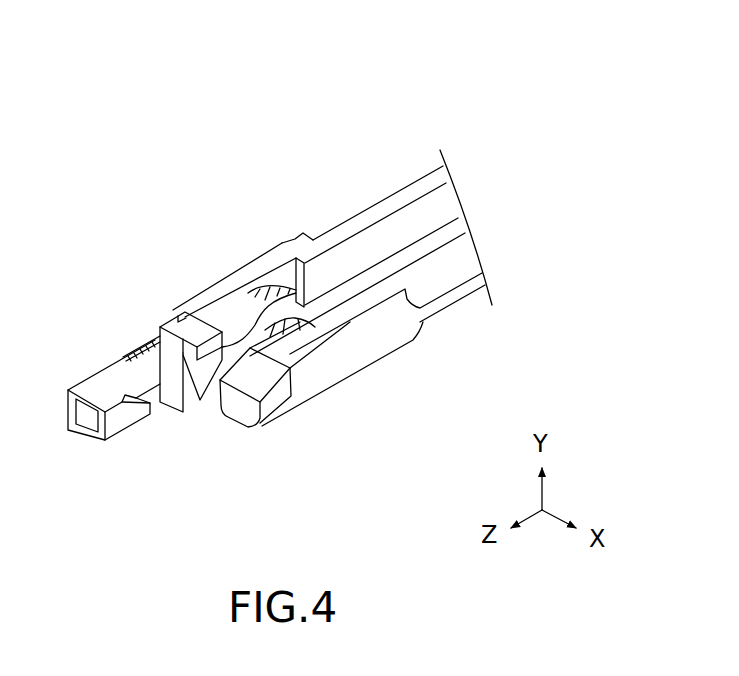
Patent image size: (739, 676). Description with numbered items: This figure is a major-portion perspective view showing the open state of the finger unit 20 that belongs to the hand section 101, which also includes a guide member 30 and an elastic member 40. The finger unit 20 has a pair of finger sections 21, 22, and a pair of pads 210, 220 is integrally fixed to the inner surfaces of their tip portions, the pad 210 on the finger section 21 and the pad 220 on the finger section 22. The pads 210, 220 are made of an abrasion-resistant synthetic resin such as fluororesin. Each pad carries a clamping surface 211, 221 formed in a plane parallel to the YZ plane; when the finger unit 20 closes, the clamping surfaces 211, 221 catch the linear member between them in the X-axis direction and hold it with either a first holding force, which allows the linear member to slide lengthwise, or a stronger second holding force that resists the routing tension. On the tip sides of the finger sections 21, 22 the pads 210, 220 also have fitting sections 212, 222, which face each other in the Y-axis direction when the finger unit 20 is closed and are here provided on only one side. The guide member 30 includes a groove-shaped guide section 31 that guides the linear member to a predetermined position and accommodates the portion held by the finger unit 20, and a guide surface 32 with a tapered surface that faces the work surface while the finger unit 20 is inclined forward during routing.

The hand section 101 is at (134, 100).
The finger unit 20 is at (407, 160).
The finger section 21 is at (284, 237).
The pad 210 is at (230, 238).
The clamping surface 211 is at (246, 318).
The fitting section 212 is at (210, 330).
The finger section 22 is at (377, 350).
The pad 220 is at (387, 430).
The clamping surface 221 is at (300, 365).
The fitting section 222 is at (264, 400).
The guide member 30 is at (98, 383).
The guide section 31 is at (118, 410).
The guide surface 32 is at (70, 433).
The elastic member 40 is at (141, 343).